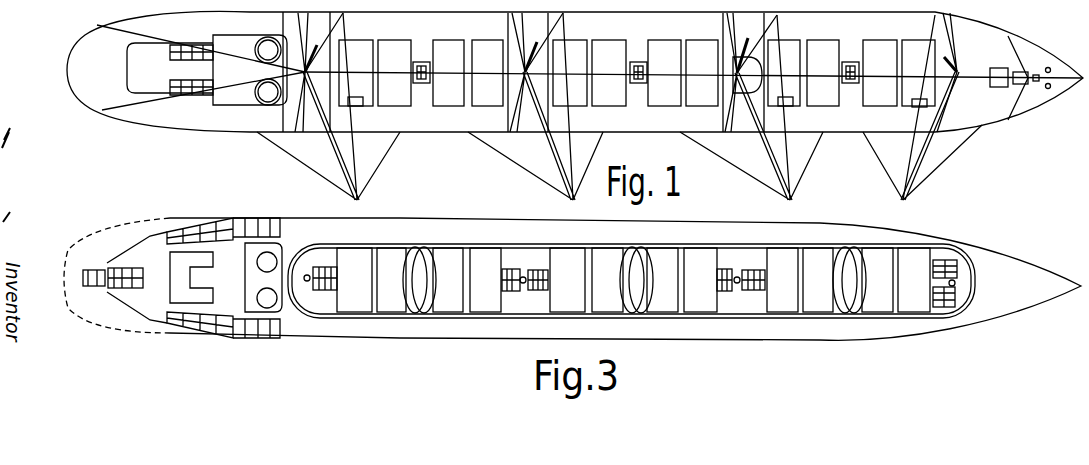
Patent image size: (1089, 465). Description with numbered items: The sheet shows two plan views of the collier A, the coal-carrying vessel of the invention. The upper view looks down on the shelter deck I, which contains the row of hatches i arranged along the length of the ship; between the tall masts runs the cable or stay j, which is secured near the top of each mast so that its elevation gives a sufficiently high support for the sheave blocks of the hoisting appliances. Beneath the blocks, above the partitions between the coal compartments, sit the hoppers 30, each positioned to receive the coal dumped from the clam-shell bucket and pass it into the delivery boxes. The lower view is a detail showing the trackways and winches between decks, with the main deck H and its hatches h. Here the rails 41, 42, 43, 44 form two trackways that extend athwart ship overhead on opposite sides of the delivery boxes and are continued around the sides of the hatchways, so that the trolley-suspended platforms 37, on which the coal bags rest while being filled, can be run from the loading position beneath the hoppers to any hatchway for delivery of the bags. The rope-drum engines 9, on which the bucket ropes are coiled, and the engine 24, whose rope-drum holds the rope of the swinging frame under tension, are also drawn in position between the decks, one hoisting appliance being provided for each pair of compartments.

In FIG. 1, the collier A is at (1046, 98).
In FIG. 3, the collier A is at (1030, 307).
In FIG. 1, the shelter deck I is at (457, 122).
In FIG. 3, the main deck H is at (792, 328).
In FIG. 1, the hatches i is at (357, 58).
In FIG. 1, the cable or stay j is at (610, 72).
In FIG. 3, the hatches h is at (450, 257).
In FIG. 1, the hopper 30 is at (850, 87).
In FIG. 1, the platform 37 is at (358, 104).
In FIG. 3, the engine 24 is at (318, 262).
In FIG. 3, the rope-drum engine 9 is at (512, 297).
In FIG. 3, the rail 41 is at (410, 275).
In FIG. 3, the rail 42 is at (416, 288).
In FIG. 3, the rail 43 is at (428, 244).
In FIG. 3, the rail 44 is at (428, 311).